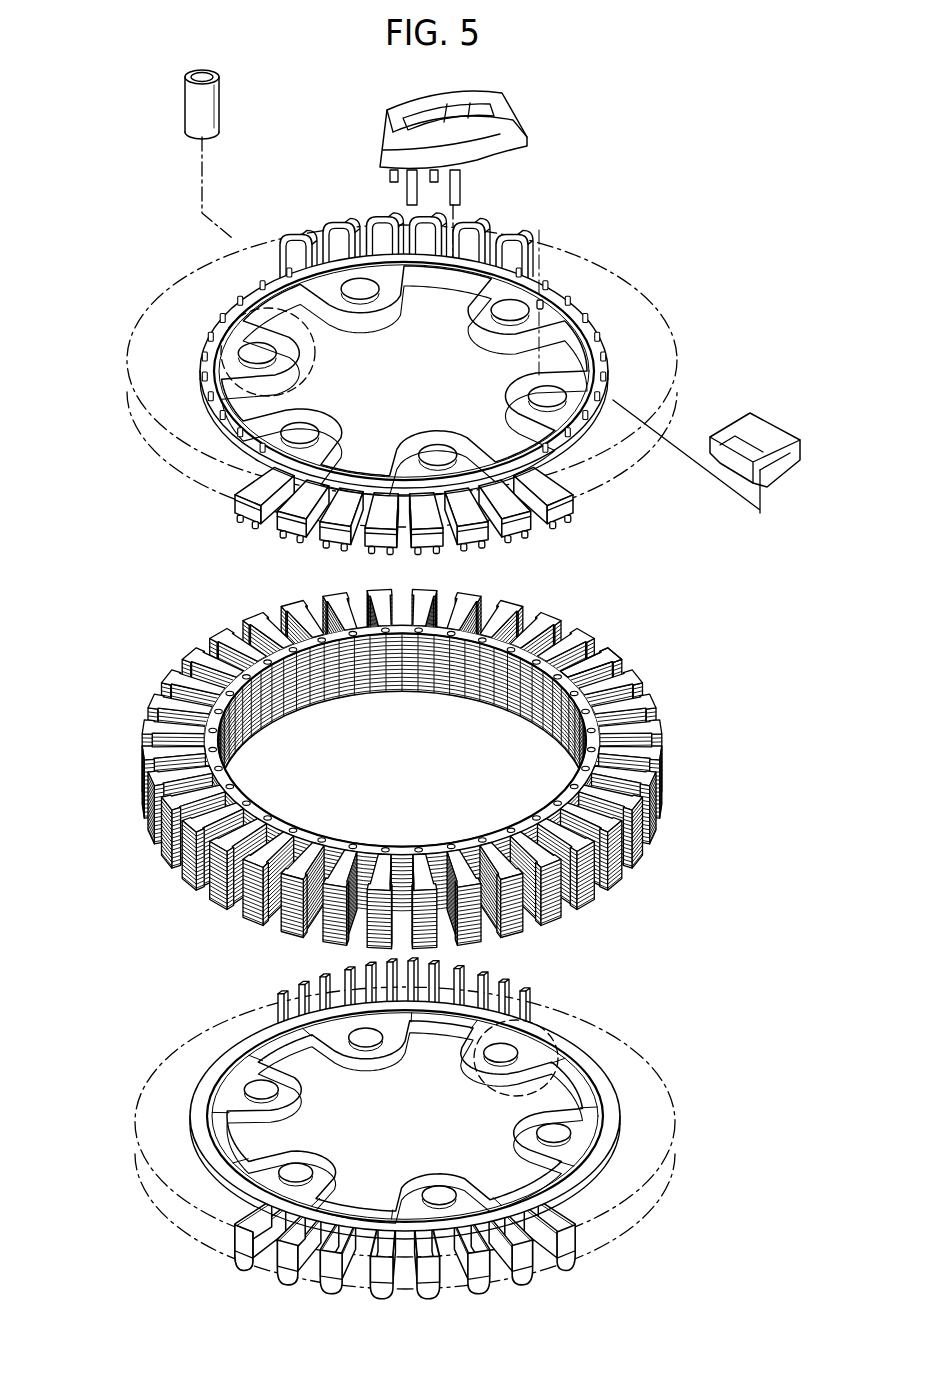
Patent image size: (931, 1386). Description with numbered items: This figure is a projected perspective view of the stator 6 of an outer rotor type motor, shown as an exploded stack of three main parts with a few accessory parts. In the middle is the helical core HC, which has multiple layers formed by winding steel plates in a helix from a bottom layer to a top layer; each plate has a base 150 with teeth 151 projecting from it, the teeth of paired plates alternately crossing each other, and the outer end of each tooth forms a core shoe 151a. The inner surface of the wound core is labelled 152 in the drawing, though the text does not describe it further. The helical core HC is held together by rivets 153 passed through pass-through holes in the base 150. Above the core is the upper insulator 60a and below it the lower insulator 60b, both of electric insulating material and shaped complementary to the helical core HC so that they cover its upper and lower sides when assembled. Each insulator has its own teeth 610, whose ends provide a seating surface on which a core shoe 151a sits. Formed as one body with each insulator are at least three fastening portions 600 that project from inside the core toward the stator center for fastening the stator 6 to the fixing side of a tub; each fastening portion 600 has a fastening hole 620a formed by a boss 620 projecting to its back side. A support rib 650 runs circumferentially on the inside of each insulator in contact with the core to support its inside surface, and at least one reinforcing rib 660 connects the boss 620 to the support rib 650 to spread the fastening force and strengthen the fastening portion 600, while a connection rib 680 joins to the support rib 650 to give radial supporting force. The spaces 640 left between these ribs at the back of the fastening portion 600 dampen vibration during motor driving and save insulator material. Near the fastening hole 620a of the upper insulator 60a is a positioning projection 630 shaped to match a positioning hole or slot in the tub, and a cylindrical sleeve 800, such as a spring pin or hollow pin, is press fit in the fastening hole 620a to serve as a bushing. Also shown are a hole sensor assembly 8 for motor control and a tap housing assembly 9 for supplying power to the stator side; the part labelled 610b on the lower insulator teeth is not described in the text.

The stator 6 is at (101, 190).
The cylindrical sleeve 800 is at (222, 106).
The hole sensor assembly 8 is at (531, 129).
The positioning projection 630 is at (541, 297).
The upper insulator 60a is at (439, 375).
The fastening hole 620a is at (378, 300).
The fastening portion 600 is at (293, 388).
The tap housing assembly 9 is at (766, 432).
The helical core HC is at (445, 768).
The base 150 is at (412, 768).
The teeth 151 is at (203, 650).
The core shoe 151a is at (615, 656).
The bore 152 is at (286, 720).
The rivets 153 is at (353, 842).
The lower insulator 60b is at (433, 1146).
The spaces 640 is at (278, 1000).
The support rib 650 is at (605, 1050).
The reinforcing rib 660 is at (270, 1160).
The boss 620 is at (312, 1172).
The connection rib 680 is at (352, 1215).
The teeth 610 is at (464, 1276).
The bobbin flange 610b is at (568, 1258).